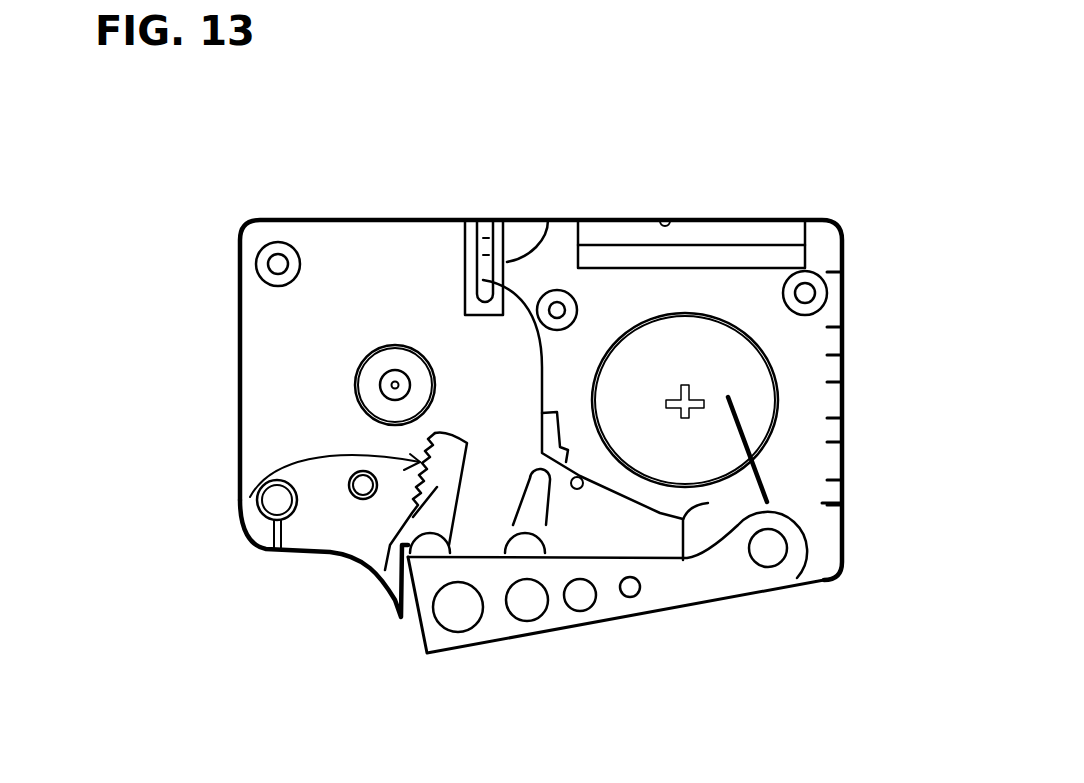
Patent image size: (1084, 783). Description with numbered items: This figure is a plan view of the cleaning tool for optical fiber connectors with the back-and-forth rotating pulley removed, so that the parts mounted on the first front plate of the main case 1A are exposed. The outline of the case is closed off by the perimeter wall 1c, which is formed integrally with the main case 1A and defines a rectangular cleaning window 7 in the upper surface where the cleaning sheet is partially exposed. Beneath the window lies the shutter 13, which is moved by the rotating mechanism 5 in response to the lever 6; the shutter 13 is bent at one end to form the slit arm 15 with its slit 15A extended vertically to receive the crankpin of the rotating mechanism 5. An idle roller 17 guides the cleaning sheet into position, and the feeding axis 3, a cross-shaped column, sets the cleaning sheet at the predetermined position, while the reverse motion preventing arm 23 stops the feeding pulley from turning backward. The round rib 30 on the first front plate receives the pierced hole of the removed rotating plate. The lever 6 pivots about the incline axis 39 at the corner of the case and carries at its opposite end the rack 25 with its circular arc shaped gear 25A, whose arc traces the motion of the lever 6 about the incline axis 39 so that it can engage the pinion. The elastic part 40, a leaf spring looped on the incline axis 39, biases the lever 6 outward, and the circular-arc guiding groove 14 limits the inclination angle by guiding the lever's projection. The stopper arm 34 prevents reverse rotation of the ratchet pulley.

The main case 1A is at (325, 216).
The perimeter wall 1c is at (283, 218).
The feeding axis 3 is at (687, 388).
The rotating mechanism 5 is at (424, 308).
The lever 6 is at (565, 605).
The cleaning window 7 is at (766, 211).
The shutter 13 is at (665, 221).
The guiding groove 14 is at (533, 507).
The slit arm 15 is at (500, 262).
The slit 15A is at (487, 245).
The idle roller 17 is at (278, 264).
The reverse motion preventing arm 23 is at (683, 553).
The rack 25 is at (385, 570).
The circular arc shaped gear 25A is at (258, 500).
The round rib 30 is at (355, 388).
The stopper arm 34 is at (527, 293).
The incline axis 39 is at (773, 555).
The elastic part 40 is at (840, 520).